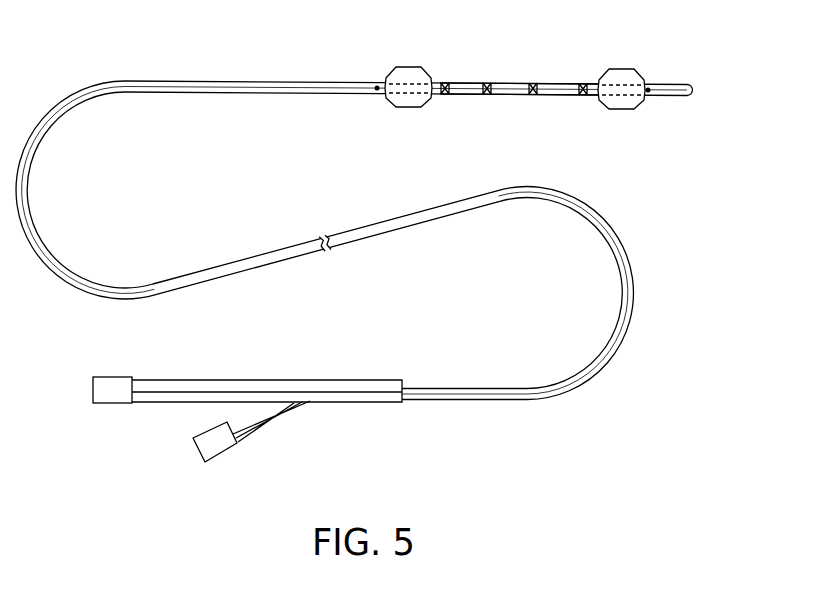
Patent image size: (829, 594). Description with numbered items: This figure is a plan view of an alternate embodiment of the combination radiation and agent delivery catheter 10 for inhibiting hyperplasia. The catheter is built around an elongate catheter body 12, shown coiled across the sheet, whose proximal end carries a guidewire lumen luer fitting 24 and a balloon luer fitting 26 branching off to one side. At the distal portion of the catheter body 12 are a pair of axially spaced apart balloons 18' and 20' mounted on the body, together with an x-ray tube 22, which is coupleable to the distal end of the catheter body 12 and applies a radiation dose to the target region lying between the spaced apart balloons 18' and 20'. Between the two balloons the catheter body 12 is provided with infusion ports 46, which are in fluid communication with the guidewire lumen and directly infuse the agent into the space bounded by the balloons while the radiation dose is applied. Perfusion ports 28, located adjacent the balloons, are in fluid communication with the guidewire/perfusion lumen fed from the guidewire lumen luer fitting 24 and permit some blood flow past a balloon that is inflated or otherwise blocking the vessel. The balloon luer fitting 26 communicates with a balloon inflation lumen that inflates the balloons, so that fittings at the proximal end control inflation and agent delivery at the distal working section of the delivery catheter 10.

The combination radiation and agent delivery catheter 10 is at (362, 256).
The catheter body 12 is at (243, 261).
The balloon 18' is at (650, 65).
The balloon 20' is at (436, 64).
The x-ray tube 22 is at (592, 94).
The guidewire lumen luer fitting 24 is at (119, 377).
The balloon luer fitting 26 is at (220, 458).
The perfusion ports 28 is at (377, 90).
The infusion ports 46 is at (533, 97).